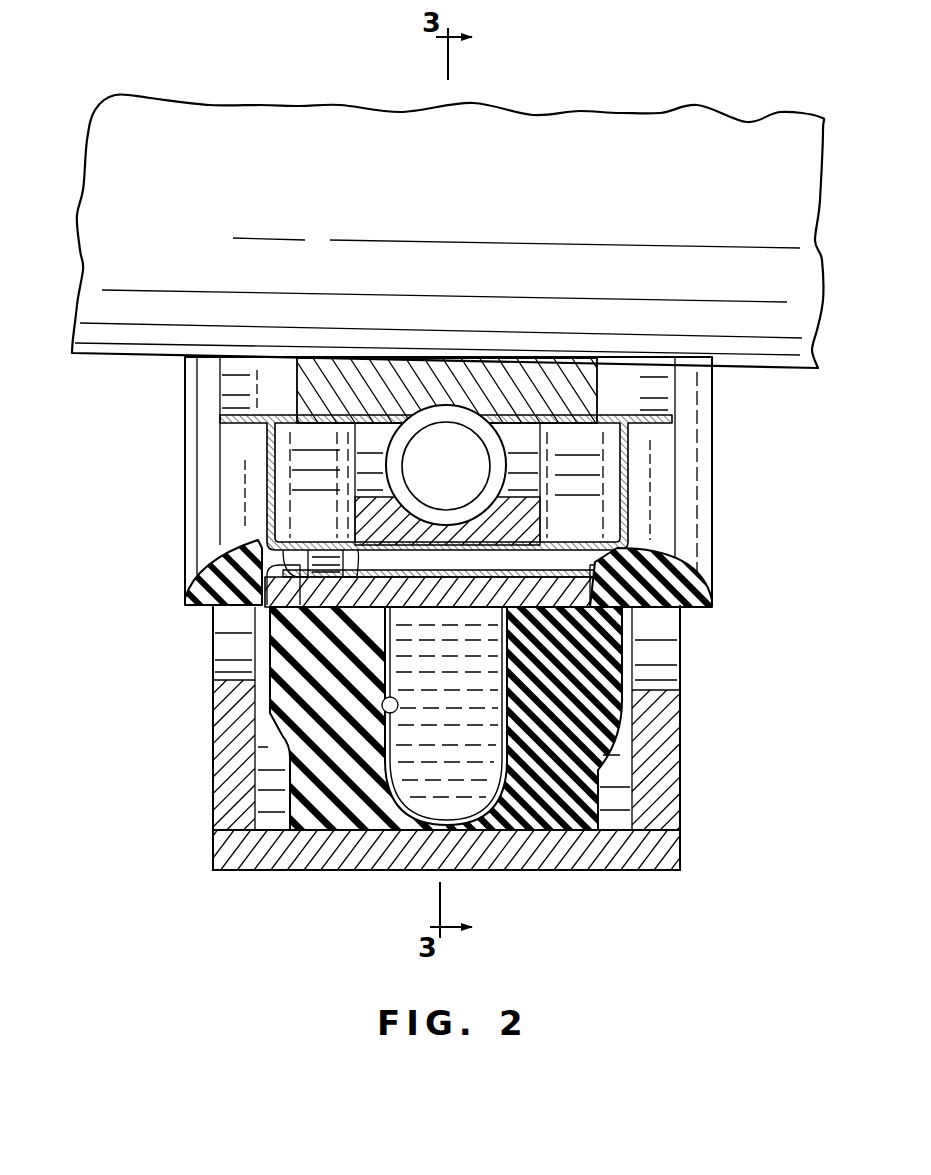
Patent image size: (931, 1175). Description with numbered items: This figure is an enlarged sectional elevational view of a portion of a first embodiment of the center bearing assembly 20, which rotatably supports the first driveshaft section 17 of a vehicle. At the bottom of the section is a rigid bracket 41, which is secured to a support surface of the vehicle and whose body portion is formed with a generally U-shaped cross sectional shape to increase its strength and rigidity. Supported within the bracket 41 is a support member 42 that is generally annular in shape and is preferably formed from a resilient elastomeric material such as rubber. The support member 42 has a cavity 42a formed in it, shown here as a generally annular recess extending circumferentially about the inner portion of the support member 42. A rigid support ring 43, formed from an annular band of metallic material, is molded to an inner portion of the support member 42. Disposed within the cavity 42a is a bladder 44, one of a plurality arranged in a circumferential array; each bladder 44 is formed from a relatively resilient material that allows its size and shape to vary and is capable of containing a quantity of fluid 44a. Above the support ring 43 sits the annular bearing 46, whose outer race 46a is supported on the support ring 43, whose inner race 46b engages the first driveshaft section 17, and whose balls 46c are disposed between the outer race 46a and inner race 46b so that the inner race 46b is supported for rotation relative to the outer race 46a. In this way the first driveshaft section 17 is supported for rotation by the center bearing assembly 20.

The first driveshaft section 17 is at (256, 115).
The center bearing assembly 20 is at (421, 744).
The bracket 41 is at (258, 853).
The support member 42 is at (300, 797).
The cavity 42a is at (383, 720).
The support ring 43 is at (587, 600).
The bladder 44 is at (510, 777).
The fluid 44a is at (473, 677).
The annular bearing 46 is at (218, 470).
The outer race 46a is at (527, 525).
The inner race 46b is at (587, 400).
The balls 46c is at (424, 420).